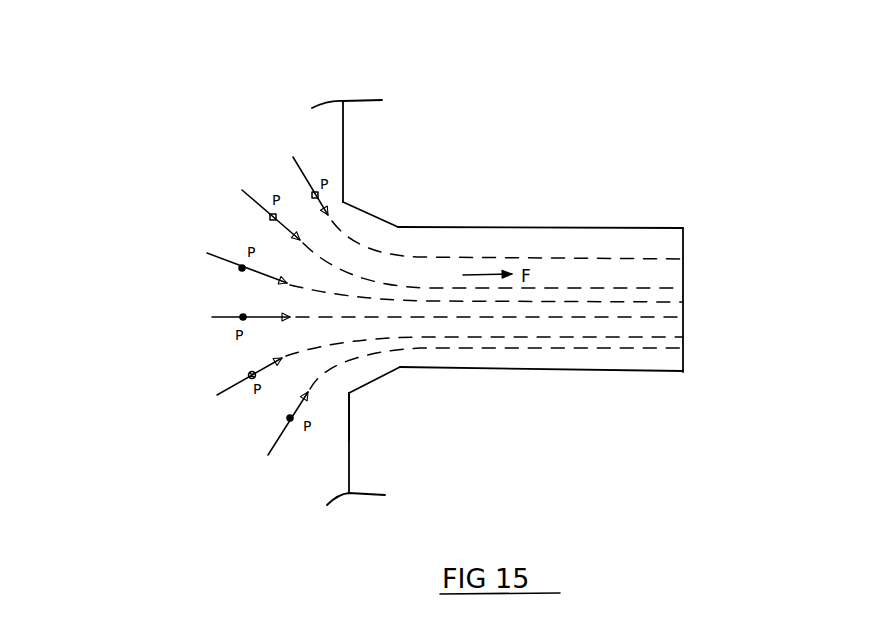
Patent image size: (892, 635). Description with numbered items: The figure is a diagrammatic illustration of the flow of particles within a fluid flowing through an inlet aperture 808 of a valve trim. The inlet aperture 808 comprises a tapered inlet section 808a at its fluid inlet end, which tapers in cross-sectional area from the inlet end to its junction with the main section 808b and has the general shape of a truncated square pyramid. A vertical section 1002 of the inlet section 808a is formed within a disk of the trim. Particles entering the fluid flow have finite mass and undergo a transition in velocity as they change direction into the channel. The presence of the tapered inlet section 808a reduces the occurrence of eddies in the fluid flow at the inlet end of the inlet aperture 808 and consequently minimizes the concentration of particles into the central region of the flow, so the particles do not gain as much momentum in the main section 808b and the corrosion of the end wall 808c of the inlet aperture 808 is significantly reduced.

The inlet aperture 808 is at (463, 274).
The inlet section 808a is at (386, 191).
The main section 808b is at (548, 211).
The end wall 808c is at (684, 295).
The vertical section 1002 is at (375, 381).